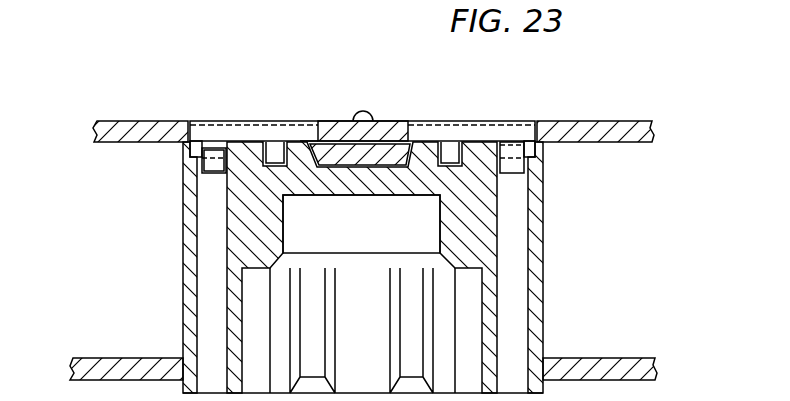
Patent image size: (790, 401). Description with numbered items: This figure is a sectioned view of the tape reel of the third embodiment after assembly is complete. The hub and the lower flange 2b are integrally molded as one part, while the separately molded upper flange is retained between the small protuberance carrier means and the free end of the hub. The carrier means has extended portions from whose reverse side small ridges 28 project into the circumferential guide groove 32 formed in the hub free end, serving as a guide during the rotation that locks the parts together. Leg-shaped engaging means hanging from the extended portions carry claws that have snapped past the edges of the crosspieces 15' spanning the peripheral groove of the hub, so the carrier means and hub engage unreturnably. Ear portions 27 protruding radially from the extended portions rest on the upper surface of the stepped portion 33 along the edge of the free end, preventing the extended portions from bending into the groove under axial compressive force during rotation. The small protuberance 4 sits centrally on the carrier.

The ear portion 27 is at (362, 101).
The crosspiece 15' is at (219, 114).
The small ridge 28 is at (379, 109).
The projection 4 is at (361, 88).
The stepped portion 33 is at (359, 169).
The guide groove 32 is at (361, 218).
The flange 2b is at (600, 339).